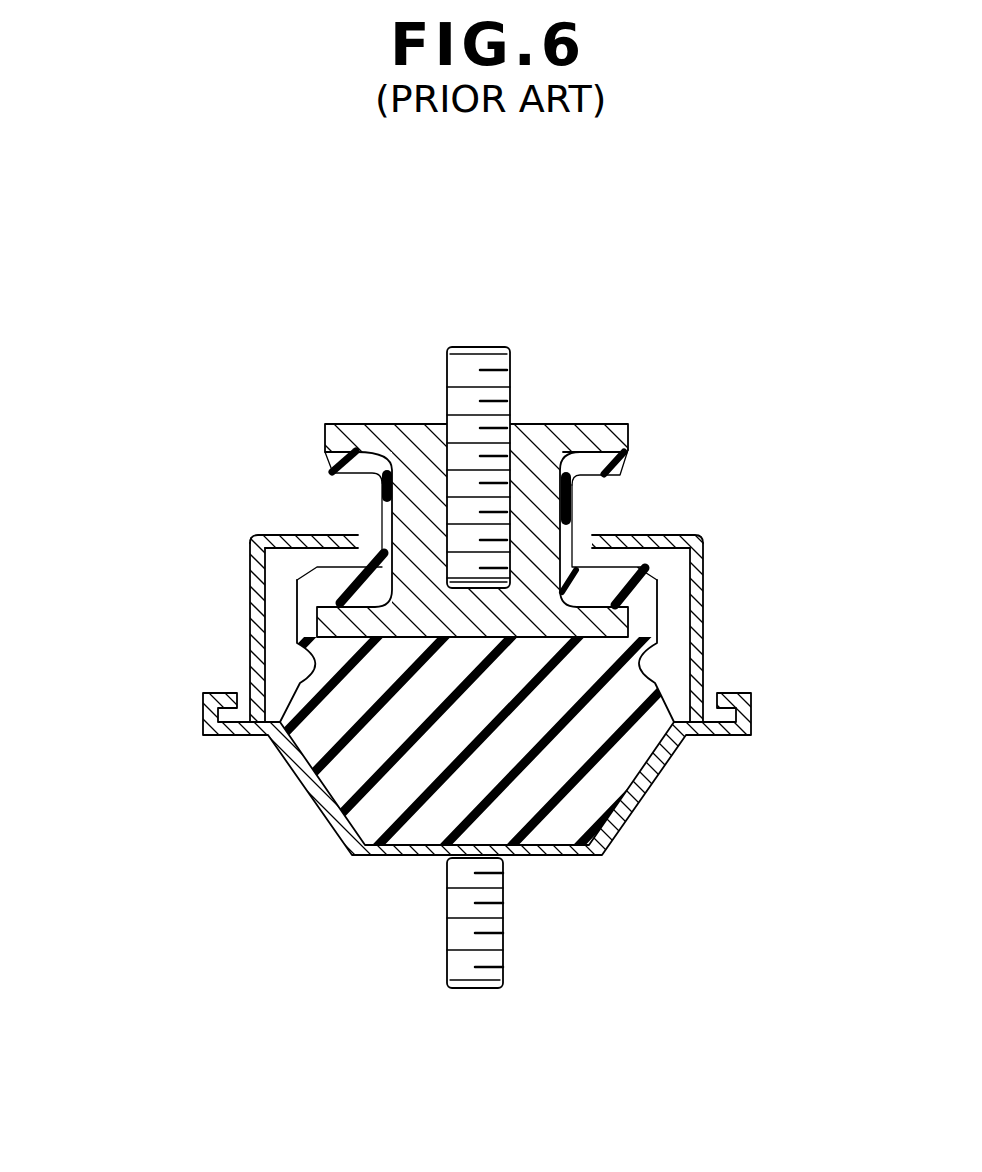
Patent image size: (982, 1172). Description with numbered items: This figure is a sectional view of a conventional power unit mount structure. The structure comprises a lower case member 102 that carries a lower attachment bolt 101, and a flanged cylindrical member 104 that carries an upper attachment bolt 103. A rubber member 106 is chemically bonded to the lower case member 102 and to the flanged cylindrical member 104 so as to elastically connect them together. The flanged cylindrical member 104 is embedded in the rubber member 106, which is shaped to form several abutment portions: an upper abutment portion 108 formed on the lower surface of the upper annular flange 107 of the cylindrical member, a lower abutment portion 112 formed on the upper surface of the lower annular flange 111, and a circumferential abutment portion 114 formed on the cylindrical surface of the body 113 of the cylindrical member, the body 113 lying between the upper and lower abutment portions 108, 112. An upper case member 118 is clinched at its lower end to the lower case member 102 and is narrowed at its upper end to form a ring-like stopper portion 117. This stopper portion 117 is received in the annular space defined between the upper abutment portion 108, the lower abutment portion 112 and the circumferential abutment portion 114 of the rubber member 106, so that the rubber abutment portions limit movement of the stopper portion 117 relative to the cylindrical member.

The lower attachment bolt 101 is at (503, 957).
The lower case member 102 is at (638, 807).
The upper attachment bolt 103 is at (510, 360).
The flanged cylindrical member 104 is at (368, 382).
The rubber member 106 is at (363, 757).
The upper annular flange 107 is at (628, 440).
The upper abutment portion 108 is at (627, 465).
The lower annular flange 111 is at (630, 618).
The lower abutment portion 112 is at (595, 583).
The body 113 is at (380, 510).
The circumferential abutment portion 114 is at (381, 496).
The ring-like stopper portion 117 is at (335, 535).
The upper case member 118 is at (250, 648).